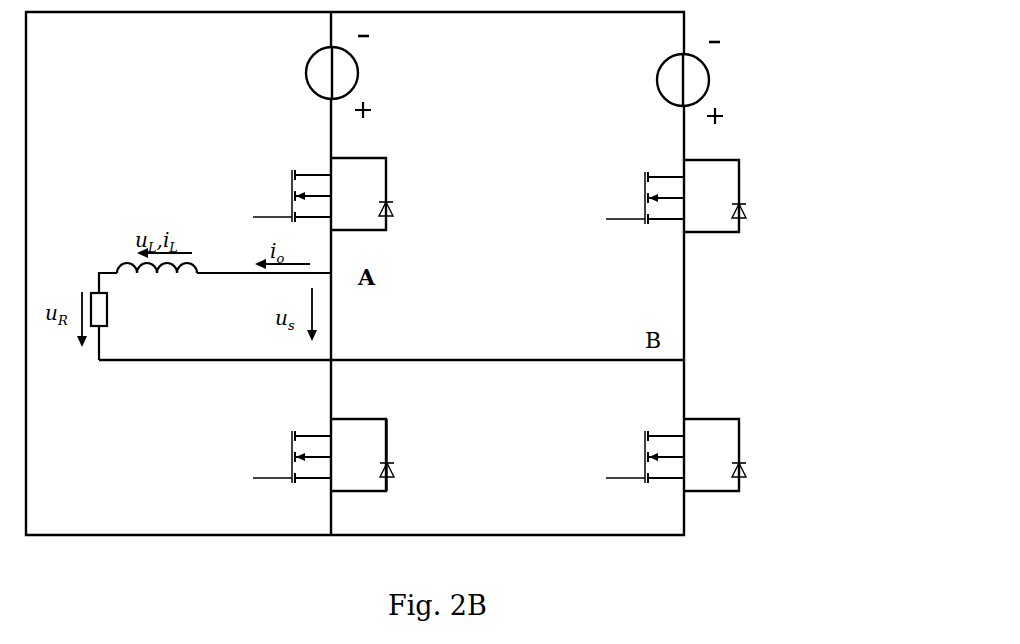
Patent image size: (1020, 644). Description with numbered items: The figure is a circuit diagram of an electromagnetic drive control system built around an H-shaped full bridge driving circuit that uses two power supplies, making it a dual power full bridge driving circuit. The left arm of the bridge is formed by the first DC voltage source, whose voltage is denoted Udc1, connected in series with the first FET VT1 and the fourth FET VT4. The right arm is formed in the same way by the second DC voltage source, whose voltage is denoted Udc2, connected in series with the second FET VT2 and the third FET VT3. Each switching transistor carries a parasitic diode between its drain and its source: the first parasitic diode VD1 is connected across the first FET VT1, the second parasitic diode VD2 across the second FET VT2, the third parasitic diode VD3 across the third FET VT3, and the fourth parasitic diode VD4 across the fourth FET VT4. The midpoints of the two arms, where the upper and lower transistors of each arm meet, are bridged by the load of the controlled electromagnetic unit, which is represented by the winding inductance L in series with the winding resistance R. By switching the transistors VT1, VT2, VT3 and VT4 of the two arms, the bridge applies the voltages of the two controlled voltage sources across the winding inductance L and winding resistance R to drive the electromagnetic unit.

The voltage of the controlled voltage source on the left bridge arm Udc1 is at (361, 77).
The voltage of the controlled voltage source on the right bridge arm Udc2 is at (712, 83).
The first FET VT1 is at (286, 194).
The second FET VT2 is at (643, 196).
The third FET VT3 is at (643, 455).
The fourth FET VT4 is at (285, 455).
The first parasitic diode VD1 is at (416, 194).
The second parasitic diode VD2 is at (767, 196).
The third parasitic diode VD3 is at (771, 455).
The fourth parasitic diode VD4 is at (418, 455).
The winding inductance L is at (157, 284).
The winding resistance R is at (115, 318).